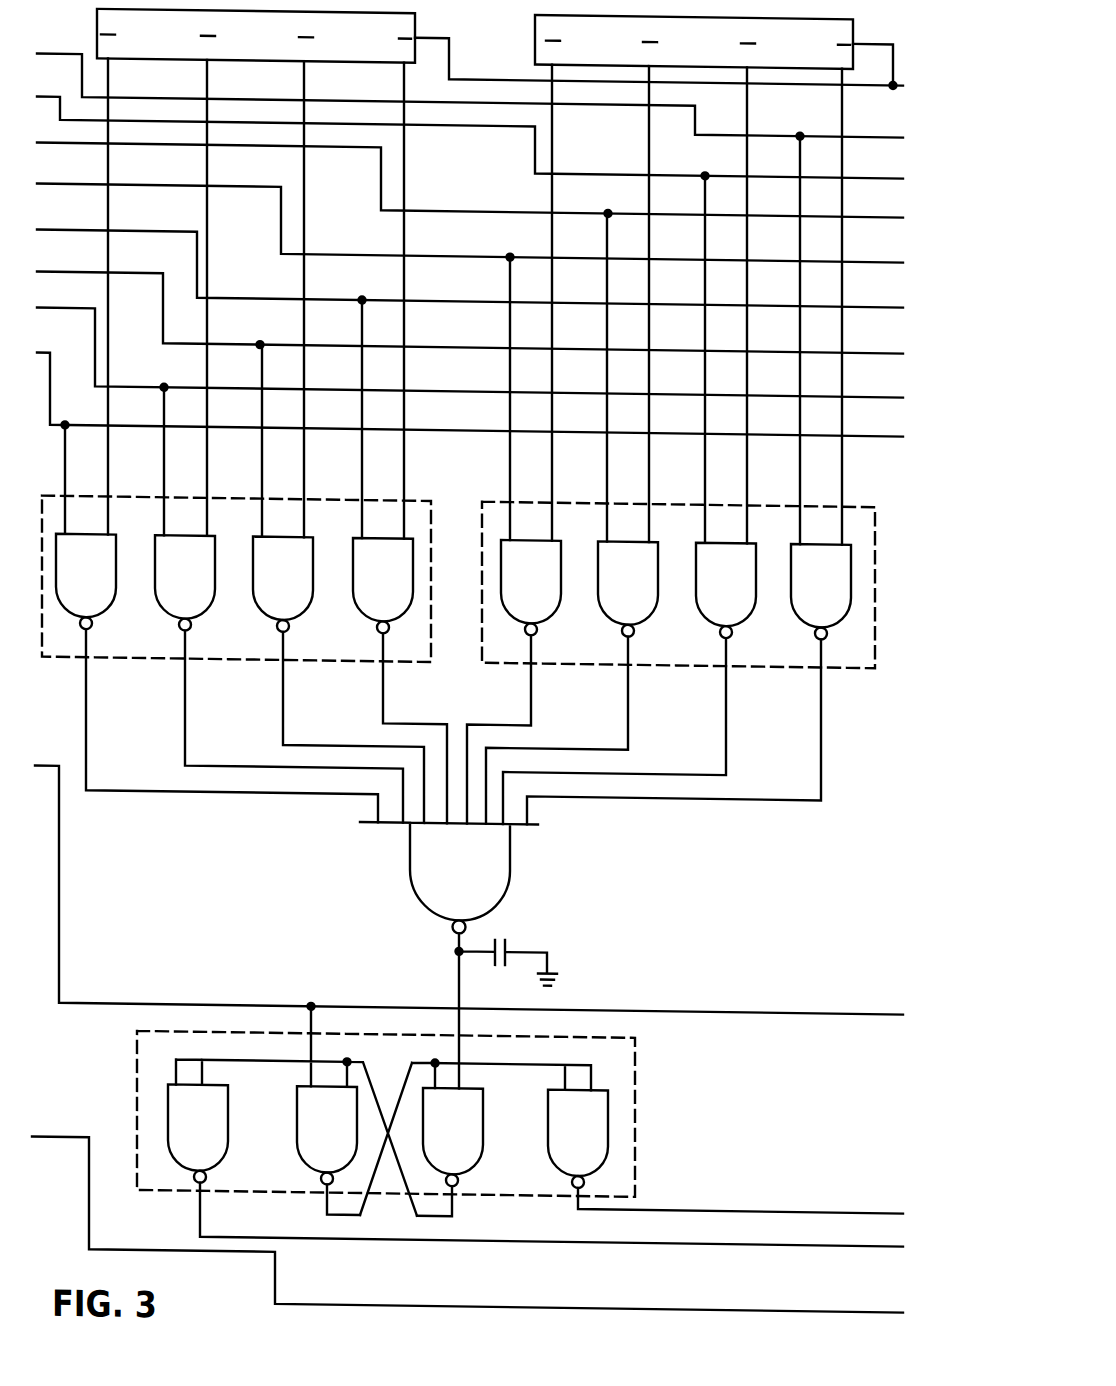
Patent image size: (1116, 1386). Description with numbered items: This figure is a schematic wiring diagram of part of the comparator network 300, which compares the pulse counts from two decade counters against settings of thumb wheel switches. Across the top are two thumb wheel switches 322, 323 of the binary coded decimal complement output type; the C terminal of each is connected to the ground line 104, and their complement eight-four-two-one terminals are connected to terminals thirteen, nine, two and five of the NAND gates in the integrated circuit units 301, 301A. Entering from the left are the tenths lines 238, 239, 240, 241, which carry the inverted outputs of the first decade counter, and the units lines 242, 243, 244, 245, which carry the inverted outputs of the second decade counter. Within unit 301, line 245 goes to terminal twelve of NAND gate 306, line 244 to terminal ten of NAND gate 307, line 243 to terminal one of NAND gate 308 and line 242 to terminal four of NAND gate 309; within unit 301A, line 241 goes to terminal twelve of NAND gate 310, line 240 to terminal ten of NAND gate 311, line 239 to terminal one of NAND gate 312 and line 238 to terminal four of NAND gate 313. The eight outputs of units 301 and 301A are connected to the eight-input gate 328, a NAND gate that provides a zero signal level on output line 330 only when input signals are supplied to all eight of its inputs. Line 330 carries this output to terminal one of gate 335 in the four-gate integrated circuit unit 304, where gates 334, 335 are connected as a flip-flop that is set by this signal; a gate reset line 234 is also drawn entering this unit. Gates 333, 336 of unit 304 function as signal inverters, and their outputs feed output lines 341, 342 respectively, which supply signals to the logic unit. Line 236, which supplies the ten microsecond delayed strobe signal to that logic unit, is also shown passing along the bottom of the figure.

The ground line 104 is at (659, 62).
The gate reset line 234 is at (103, 1002).
The delayed strobe signal line 236 is at (98, 1133).
The tenths line 238 is at (88, 36).
The tenths line 239 is at (68, 84).
The tenths line 240 is at (96, 143).
The tenths line 241 is at (85, 183).
The units line 242 is at (89, 227).
The units line 243 is at (89, 269).
The units line 244 is at (89, 307).
The units line 245 is at (63, 340).
The comparator network 300 is at (492, 180).
The integrated circuit unit 301 is at (437, 502).
The integrated circuit unit 301A is at (480, 518).
The integrated circuit unit 304 is at (641, 1042).
The NAND gate 306 is at (85, 591).
The NAND gate 307 is at (184, 592).
The NAND gate 308 is at (283, 594).
The NAND gate 309 is at (383, 595).
The NAND gate 310 is at (530, 597).
The NAND gate 311 is at (627, 598).
The NAND gate 312 is at (726, 600).
The NAND gate 313 is at (821, 601).
The thumb wheel switch 322 is at (267, 36).
The thumb wheel switch 323 is at (705, 42).
The eight-input gate 328 is at (536, 868).
The output line 330 is at (458, 985).
The gate 333 is at (198, 1138).
The gate 334 is at (324, 1140).
The gate 335 is at (453, 1142).
The gate 336 is at (578, 1144).
The output line 341 is at (623, 1234).
The output line 342 is at (700, 1201).